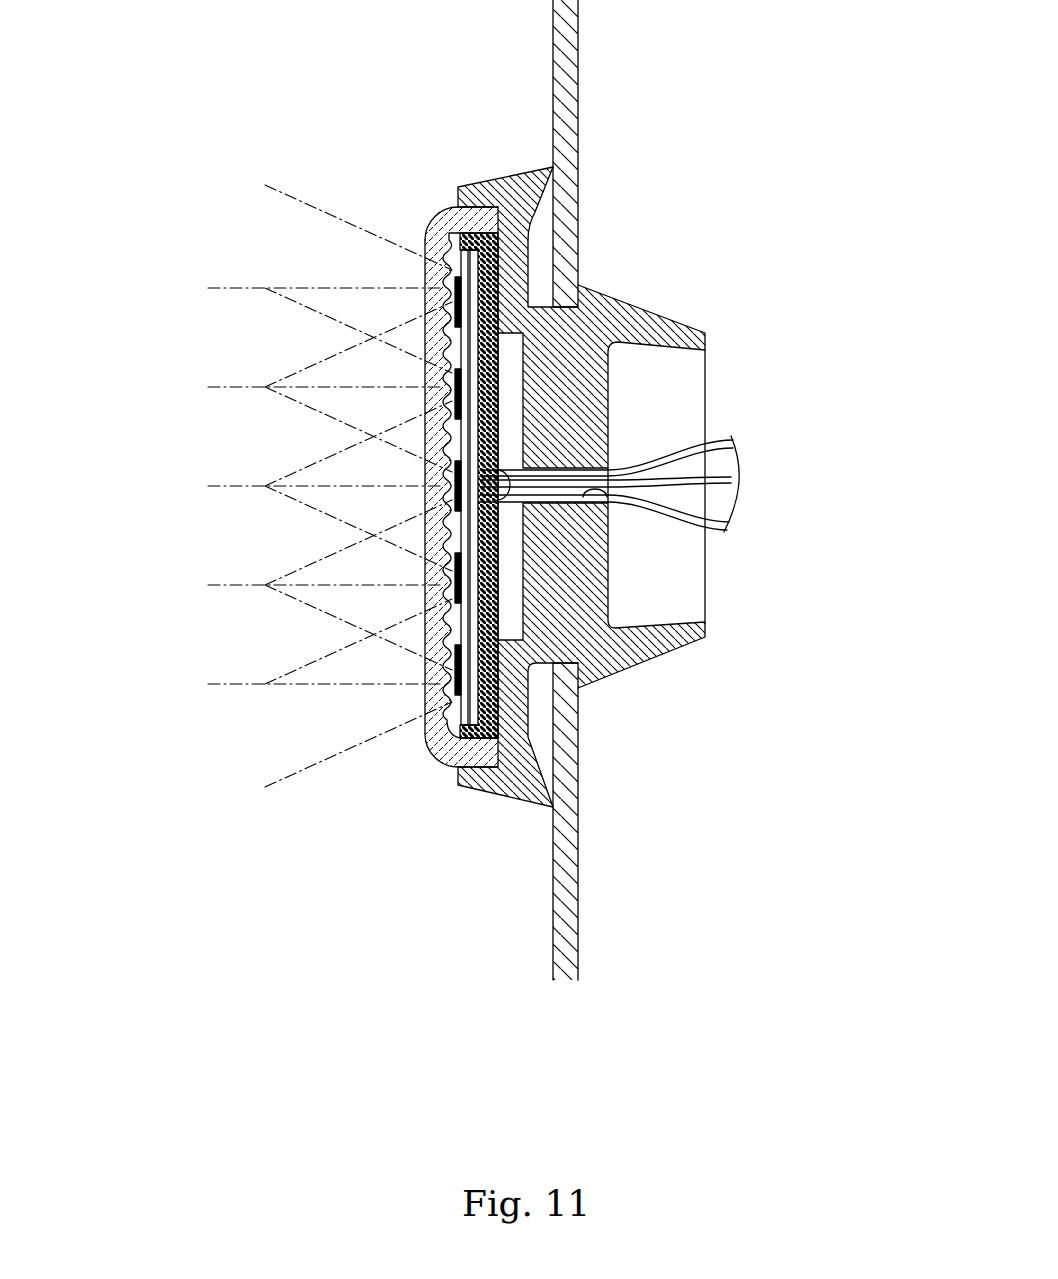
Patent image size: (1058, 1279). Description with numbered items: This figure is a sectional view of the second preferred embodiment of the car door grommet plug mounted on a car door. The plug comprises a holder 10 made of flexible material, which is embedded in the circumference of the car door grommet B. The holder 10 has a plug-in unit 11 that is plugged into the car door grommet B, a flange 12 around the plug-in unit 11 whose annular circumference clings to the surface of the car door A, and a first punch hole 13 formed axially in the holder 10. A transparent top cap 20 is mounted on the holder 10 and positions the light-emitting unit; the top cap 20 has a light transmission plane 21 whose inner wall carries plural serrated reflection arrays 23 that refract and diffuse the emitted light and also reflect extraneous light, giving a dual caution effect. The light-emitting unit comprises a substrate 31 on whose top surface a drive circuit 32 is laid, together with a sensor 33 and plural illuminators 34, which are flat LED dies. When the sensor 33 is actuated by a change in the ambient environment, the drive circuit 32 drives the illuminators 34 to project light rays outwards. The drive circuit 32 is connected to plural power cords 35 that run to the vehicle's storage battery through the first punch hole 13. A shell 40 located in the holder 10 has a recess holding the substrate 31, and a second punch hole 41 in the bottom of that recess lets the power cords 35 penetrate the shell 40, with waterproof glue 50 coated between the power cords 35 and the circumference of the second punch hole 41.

The holder 10 is at (489, 481).
The plug-in unit 11 is at (657, 313).
The flange 12 is at (517, 178).
The first punch hole 13 is at (607, 493).
The top cap 20 is at (395, 482).
The light transmission plane 21 is at (425, 277).
The serrated reflection arrays 23 is at (425, 738).
The substrate 31 is at (523, 363).
The drive circuit 32 is at (457, 366).
The sensor 33 is at (457, 468).
The illuminators 34 is at (457, 672).
The power cords 35 is at (683, 450).
The shell 40 is at (497, 583).
The second punch hole 41 is at (520, 462).
The waterproof glue 50 is at (457, 560).
The car door A is at (565, 812).
The car door grommet B is at (568, 663).